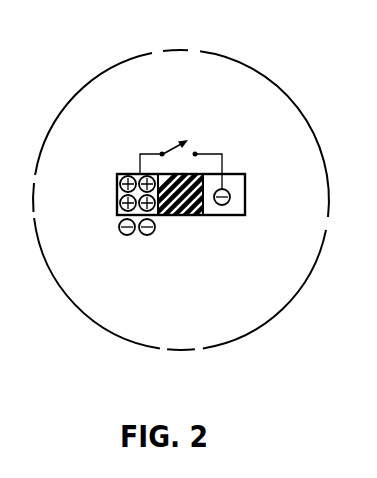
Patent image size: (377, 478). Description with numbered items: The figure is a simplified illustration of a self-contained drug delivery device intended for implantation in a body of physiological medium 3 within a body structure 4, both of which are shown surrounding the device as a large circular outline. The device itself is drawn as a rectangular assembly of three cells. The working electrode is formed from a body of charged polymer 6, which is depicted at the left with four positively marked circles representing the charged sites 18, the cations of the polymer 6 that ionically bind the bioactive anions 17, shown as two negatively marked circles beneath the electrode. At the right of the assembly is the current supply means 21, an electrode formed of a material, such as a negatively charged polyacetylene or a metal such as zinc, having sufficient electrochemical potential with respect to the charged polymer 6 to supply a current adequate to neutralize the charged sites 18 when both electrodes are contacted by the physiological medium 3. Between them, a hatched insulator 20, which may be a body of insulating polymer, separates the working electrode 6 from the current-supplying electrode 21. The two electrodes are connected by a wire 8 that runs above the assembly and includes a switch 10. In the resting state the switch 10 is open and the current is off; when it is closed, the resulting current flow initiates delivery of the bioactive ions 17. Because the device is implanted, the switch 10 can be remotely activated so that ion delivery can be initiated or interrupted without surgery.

The physiological medium 3 is at (302, 233).
The body structure 4 is at (190, 200).
The charged polymer 6 is at (119, 187).
The wire 8 is at (153, 153).
The switch 10 is at (174, 148).
The bioactive ions 17 is at (128, 236).
The charged sites 18 is at (129, 176).
The insulator 20 is at (176, 216).
The current supply means 21 is at (231, 216).